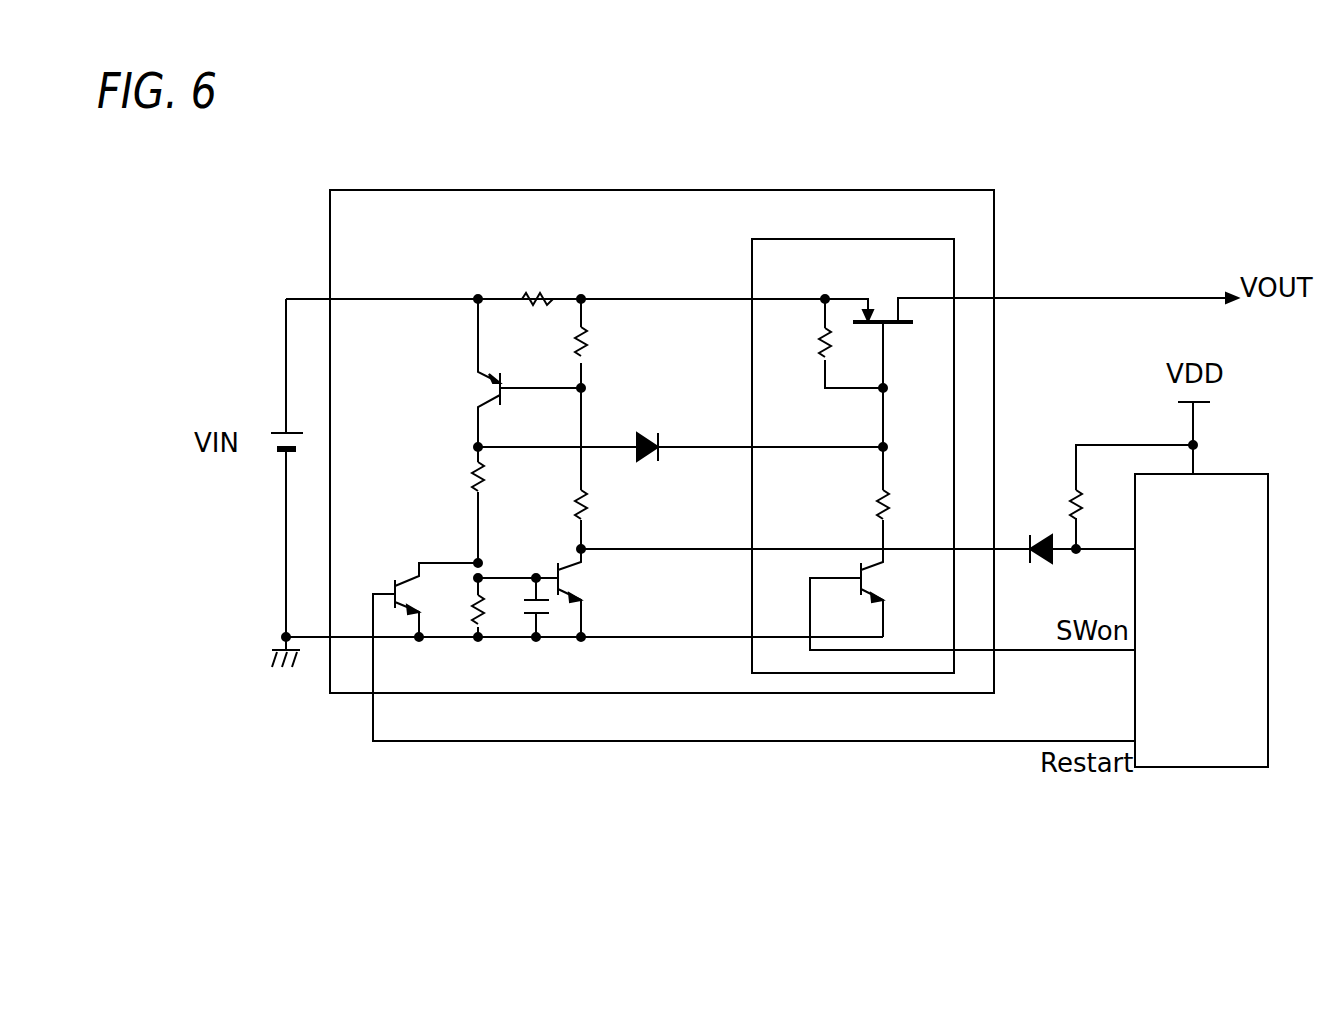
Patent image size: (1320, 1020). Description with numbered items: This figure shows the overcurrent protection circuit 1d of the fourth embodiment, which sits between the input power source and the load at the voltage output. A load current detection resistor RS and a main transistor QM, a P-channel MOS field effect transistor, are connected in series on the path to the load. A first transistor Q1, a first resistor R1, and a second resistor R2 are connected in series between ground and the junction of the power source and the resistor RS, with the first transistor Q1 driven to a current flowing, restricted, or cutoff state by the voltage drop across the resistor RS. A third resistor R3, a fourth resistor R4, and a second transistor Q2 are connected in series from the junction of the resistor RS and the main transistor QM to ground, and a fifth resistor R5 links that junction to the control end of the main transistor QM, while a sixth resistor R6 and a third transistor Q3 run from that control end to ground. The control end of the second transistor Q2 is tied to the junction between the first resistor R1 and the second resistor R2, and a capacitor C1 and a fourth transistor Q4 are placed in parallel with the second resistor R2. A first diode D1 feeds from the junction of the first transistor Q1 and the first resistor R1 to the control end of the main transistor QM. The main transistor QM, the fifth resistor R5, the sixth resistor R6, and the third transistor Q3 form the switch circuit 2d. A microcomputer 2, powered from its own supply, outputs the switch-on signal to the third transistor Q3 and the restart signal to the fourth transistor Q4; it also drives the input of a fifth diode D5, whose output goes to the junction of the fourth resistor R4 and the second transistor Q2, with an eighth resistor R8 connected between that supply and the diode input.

The overcurrent protection circuit 1d is at (662, 426).
The switch circuit 2d is at (853, 440).
The microcomputer 2 is at (1202, 603).
The load current detection resistor RS is at (540, 278).
The first resistor R1 is at (460, 505).
The second resistor R2 is at (455, 607).
The third resistor R3 is at (557, 343).
The fourth resistor R4 is at (604, 468).
The fifth resistor R5 is at (826, 343).
The sixth resistor R6 is at (907, 498).
The eighth resistor R8 is at (1108, 497).
The capacitor C1 is at (518, 607).
The first diode D1 is at (664, 467).
The fifth diode D5 is at (1036, 569).
The first transistor Q1 is at (500, 373).
The second transistor Q2 is at (589, 593).
The third transistor Q3 is at (972, 599).
The fourth transistor Q4 is at (751, 644).
The main transistor QM is at (883, 349).